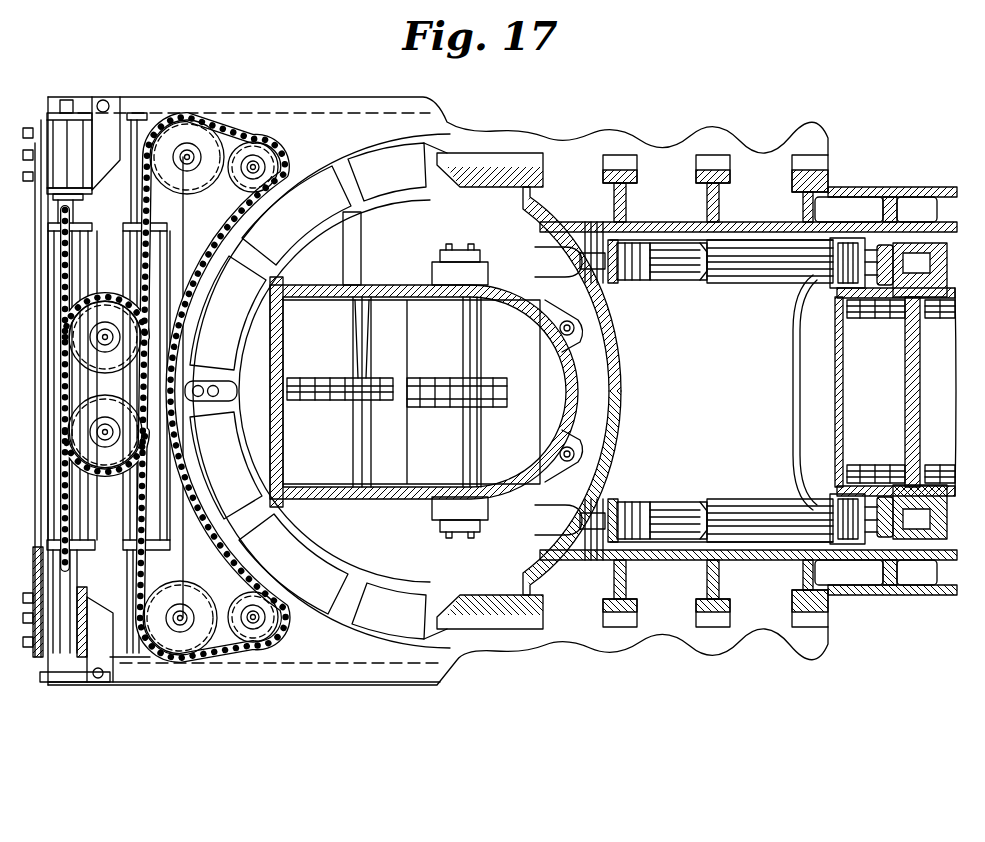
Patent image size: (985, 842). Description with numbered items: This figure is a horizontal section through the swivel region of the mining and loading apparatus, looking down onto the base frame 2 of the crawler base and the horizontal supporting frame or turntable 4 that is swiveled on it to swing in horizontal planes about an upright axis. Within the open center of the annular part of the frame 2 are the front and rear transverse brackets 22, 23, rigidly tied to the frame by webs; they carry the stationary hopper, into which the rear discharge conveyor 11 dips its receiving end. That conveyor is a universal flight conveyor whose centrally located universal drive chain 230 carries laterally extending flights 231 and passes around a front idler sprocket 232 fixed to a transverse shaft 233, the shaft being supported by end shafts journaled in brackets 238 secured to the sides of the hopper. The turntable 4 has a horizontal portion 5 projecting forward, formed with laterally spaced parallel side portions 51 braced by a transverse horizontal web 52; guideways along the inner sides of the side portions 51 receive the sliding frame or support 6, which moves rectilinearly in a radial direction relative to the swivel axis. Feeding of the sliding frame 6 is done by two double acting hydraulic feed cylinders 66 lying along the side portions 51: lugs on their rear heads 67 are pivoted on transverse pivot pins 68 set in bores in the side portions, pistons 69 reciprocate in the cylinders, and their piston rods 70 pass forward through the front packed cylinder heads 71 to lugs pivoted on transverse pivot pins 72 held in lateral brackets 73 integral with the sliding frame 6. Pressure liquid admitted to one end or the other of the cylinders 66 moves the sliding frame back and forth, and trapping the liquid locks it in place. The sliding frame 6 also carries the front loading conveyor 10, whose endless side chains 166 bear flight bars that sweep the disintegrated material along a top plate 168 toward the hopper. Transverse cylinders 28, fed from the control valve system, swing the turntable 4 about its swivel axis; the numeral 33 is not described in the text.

The frame 2 is at (320, 683).
The horizontal supporting frame or turntable 4 is at (390, 644).
The horizontal portion 5 is at (798, 358).
The sliding frame or support 6 is at (947, 287).
The front loading conveyor 10 is at (883, 465).
The rear discharge conveyor 11 is at (346, 378).
The front transverse bracket 22 is at (580, 470).
The rear transverse bracket 23 is at (350, 267).
The transverse cylinders 28 is at (60, 376).
The base plate 33 is at (134, 683).
The side portions 51 is at (825, 208).
The transverse horizontal portion or web 52 is at (780, 408).
The hydraulic feed cylinders 66 is at (778, 268).
The rear heads 67 is at (620, 283).
The transverse pivot pins 68 is at (597, 283).
The pistons 69 is at (650, 283).
The piston rods 70 is at (668, 255).
The front packed cylinder heads 71 is at (847, 275).
The transverse pivot pins 72 is at (895, 240).
The lateral brackets 73 is at (928, 243).
The endless side chains 166 is at (893, 318).
The top plate 168 is at (935, 377).
The universal drive chain 230 is at (337, 400).
The flights 231 is at (370, 326).
The front idler sprocket 232 is at (480, 394).
The transverse shaft 233 is at (478, 348).
The brackets 238 is at (462, 268).